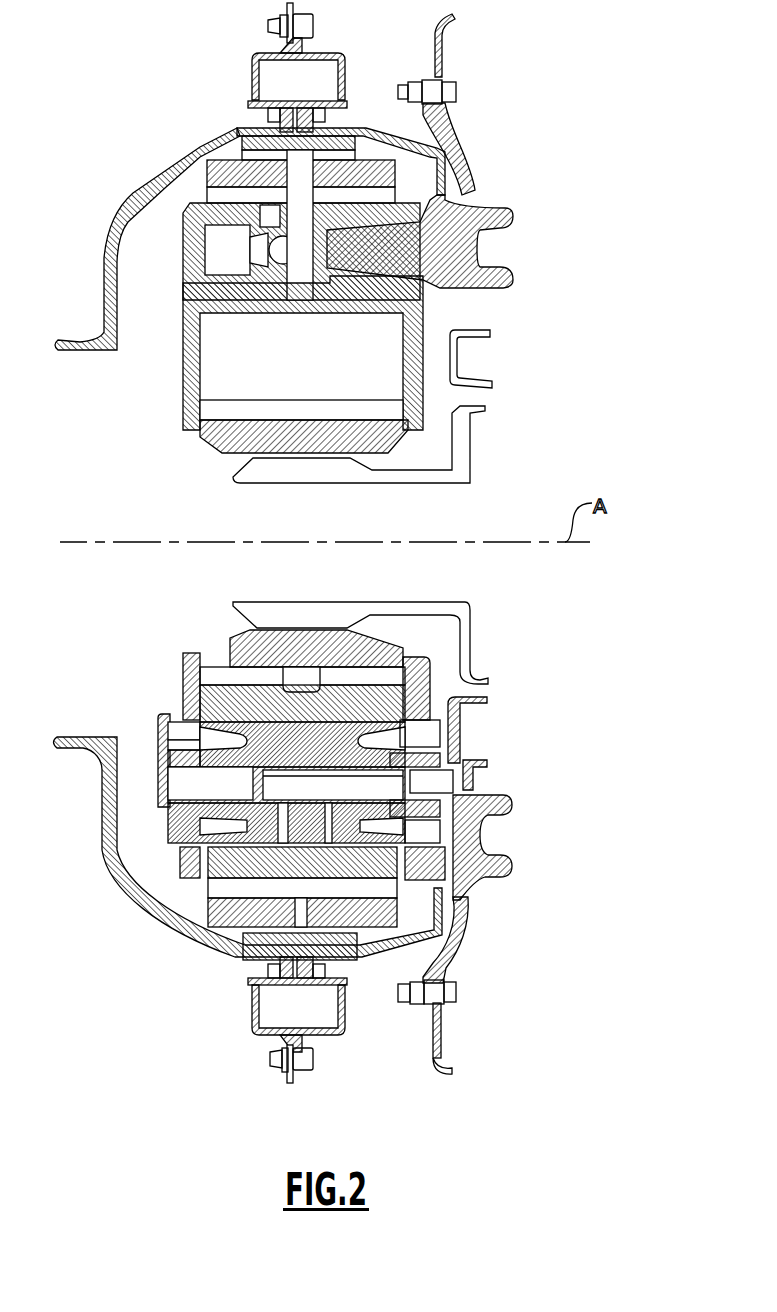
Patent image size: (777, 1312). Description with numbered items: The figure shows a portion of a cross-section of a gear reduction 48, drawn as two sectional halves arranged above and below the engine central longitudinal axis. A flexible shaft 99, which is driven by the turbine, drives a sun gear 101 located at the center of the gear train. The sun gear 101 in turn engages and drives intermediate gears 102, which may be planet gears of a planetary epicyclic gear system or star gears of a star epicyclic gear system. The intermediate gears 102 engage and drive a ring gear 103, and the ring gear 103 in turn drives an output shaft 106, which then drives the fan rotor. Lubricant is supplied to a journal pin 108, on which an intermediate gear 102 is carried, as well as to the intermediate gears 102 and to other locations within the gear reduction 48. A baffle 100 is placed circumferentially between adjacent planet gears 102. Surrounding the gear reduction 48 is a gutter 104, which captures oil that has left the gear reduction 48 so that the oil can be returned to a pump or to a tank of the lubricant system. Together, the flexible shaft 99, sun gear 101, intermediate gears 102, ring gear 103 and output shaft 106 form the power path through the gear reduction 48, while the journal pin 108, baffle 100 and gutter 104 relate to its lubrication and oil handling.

The gear reduction 48 is at (331, 813).
The flexible shaft 99 is at (428, 483).
The baffle 100 is at (425, 314).
The sun gear 101 is at (235, 445).
The intermediate gears 102 is at (373, 710).
The ring gear 103 is at (380, 913).
The gutter 104 is at (273, 1015).
The output shaft 106 is at (106, 822).
The journal pin 108 is at (190, 760).